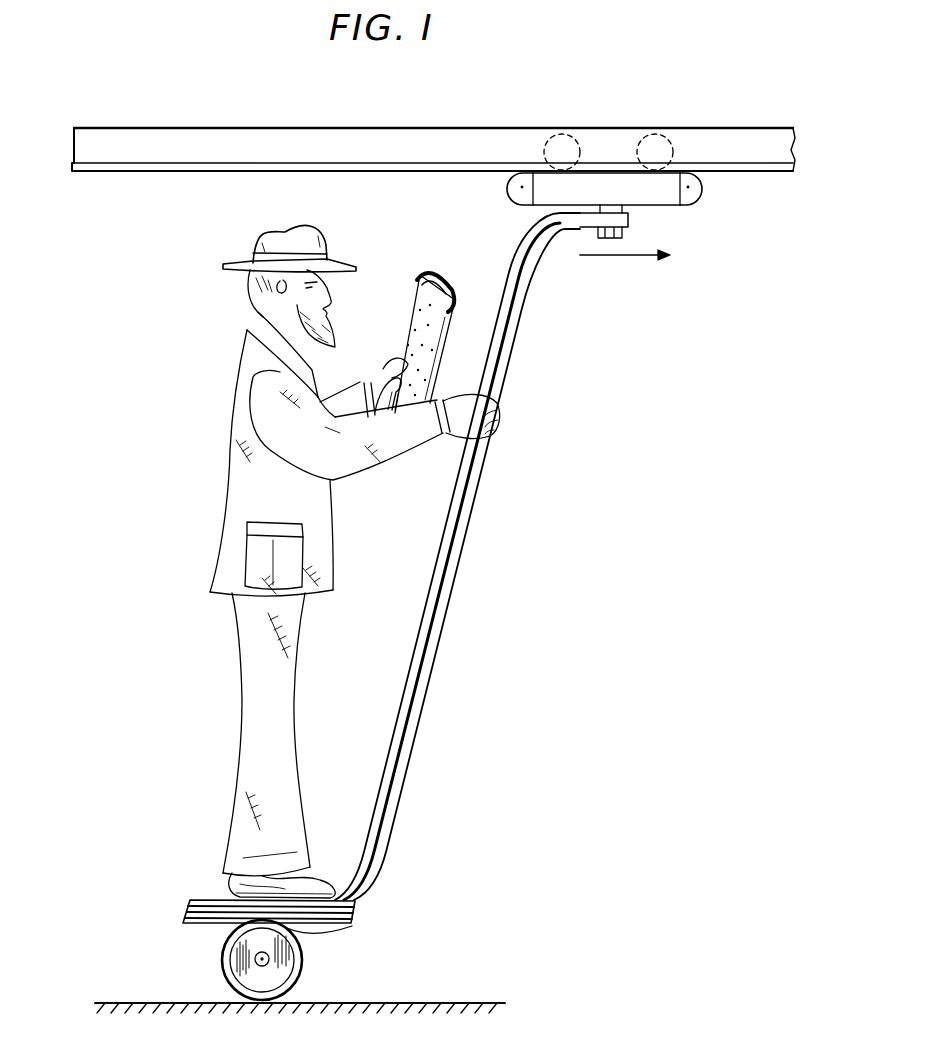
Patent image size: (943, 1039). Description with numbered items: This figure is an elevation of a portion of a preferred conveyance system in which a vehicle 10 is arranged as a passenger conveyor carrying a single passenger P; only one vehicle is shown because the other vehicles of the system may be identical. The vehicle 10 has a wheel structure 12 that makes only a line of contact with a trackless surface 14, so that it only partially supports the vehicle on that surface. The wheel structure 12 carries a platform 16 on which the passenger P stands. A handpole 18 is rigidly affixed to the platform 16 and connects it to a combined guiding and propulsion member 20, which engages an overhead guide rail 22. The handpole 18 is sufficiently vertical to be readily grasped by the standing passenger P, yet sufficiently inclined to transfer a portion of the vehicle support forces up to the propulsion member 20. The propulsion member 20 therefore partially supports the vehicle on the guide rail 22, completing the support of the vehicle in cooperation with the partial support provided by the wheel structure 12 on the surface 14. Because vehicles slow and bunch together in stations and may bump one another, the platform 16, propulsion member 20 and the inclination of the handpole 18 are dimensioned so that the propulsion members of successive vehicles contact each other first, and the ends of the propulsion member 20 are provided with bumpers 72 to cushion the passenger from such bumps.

The vehicle 10 is at (450, 733).
The wheel structure 12 is at (316, 970).
The trackless surface 14 is at (482, 1003).
The platform 16 is at (201, 899).
The handpole 18 is at (386, 849).
The combined guiding and propulsion member 20 is at (665, 207).
The guide rail 22 is at (466, 132).
The bumpers 72 is at (507, 194).
The passenger P is at (242, 766).